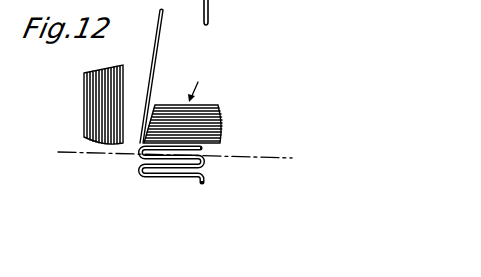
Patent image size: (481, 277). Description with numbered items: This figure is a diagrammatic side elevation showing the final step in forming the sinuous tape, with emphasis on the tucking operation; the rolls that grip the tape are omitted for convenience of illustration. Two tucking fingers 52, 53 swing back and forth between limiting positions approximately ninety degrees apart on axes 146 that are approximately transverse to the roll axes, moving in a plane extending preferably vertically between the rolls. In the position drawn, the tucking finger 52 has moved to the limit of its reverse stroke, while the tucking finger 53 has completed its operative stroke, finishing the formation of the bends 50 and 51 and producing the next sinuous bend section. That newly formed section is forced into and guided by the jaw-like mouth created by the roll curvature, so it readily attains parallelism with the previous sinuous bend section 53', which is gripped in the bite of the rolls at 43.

The bite of the rolls 43 is at (292, 158).
The bend 50 is at (210, 151).
The bend 51 is at (138, 136).
The tucking finger 52 is at (124, 57).
The tucking finger 53 is at (224, 112).
The sinuous bend section 53' is at (200, 182).
The axes 146 is at (221, 142).